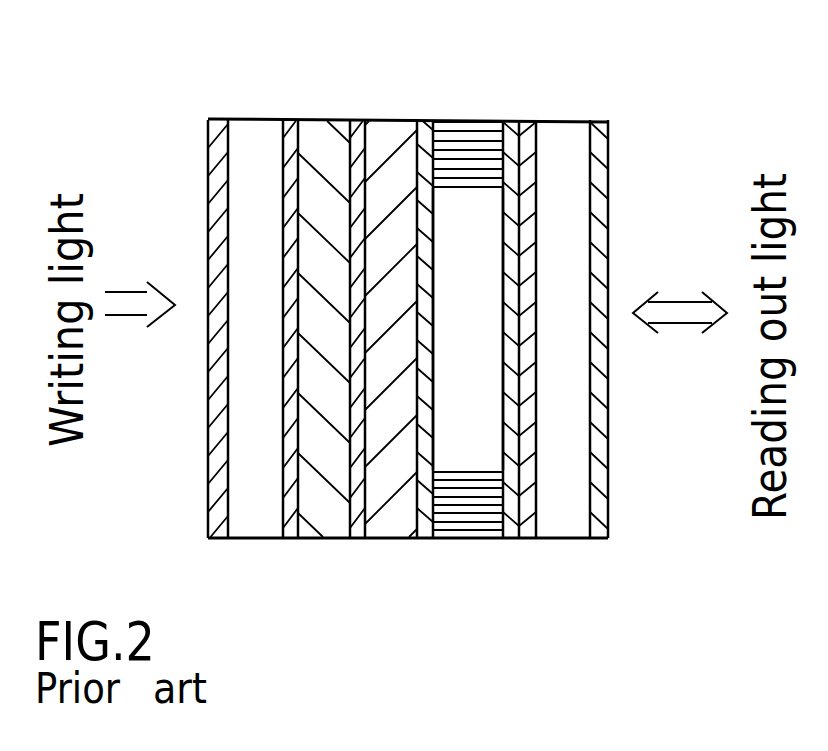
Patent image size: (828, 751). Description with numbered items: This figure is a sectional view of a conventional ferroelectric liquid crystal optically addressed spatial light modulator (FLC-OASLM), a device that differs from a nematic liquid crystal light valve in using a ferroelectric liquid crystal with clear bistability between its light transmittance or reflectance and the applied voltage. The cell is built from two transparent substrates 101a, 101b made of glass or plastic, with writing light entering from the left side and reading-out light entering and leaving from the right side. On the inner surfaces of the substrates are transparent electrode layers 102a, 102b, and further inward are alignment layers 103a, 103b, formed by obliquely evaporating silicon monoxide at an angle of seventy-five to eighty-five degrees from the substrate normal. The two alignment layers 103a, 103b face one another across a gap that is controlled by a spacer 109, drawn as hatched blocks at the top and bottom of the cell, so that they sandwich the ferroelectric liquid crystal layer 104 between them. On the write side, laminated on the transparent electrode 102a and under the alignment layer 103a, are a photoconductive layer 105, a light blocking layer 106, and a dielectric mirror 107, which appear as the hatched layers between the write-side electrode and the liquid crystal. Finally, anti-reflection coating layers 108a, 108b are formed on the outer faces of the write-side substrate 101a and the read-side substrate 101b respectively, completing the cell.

The transparent substrate 101a is at (243, 168).
The transparent substrate 101b is at (568, 503).
The transparent electrode layer 102a is at (292, 121).
The transparent electrode layer 102b is at (528, 148).
The alignment layer 103a is at (423, 527).
The alignment layer 103b is at (508, 528).
The liquid crystal layer 104 is at (473, 447).
The photoconductive layer 105 is at (327, 517).
The light blocking layer 106 is at (353, 518).
The dielectric mirror 107 is at (388, 150).
The anti-reflection coating layer 108a is at (218, 490).
The anti-reflection coating layer 108b is at (600, 178).
The spacer 109 is at (475, 150).